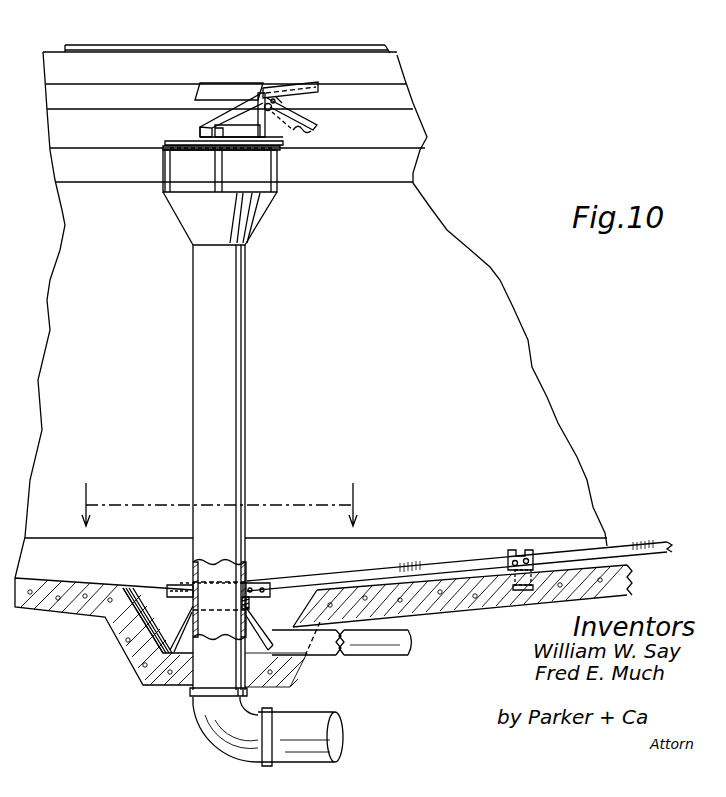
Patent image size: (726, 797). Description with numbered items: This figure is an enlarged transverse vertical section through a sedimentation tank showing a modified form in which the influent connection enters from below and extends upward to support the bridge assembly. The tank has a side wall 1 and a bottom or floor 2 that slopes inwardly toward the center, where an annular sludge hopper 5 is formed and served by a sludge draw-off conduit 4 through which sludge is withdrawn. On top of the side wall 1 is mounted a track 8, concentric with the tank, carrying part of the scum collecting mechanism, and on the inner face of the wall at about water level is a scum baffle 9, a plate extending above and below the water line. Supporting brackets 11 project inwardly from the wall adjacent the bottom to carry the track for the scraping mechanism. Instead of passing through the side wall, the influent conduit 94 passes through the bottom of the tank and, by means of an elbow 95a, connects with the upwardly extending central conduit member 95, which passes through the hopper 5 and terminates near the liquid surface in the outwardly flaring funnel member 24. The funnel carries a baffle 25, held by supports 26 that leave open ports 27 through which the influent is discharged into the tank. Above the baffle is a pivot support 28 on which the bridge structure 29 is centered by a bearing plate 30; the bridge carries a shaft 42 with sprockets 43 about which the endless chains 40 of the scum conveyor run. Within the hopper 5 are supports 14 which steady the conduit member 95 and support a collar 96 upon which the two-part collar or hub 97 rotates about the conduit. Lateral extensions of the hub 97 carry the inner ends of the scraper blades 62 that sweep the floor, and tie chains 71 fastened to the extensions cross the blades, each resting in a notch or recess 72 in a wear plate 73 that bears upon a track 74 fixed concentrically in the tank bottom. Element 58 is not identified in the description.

The side wall 1 is at (420, 215).
The bottom or floor 2 is at (630, 577).
The sludge draw-off conduit 4 is at (380, 647).
The annular sludge hopper 5 is at (147, 618).
The track 8 is at (363, 47).
The scum baffle 9 is at (390, 98).
The supporting brackets 11 is at (220, 489).
The supports 14 is at (173, 637).
The outwardly flared funnel member 24 is at (270, 212).
The baffle 25 is at (162, 144).
The supports 26 is at (275, 167).
The open ports 27 is at (190, 177).
The pivot support 28 is at (237, 129).
The bridge structure 29 is at (243, 100).
The bearing plate 30 is at (195, 141).
The endless chains 40 is at (312, 88).
The shaft 42 is at (270, 101).
The sprockets 43 is at (279, 100).
The plate 58 is at (210, 90).
The scraper blades 62 is at (268, 584).
The tie chains 71 is at (287, 579).
The notch or recess 72 is at (520, 548).
The wear plate 73 is at (531, 566).
The track 74 is at (526, 592).
The influent conduit 94 is at (320, 733).
The central conduit member 95 is at (242, 405).
The elbow 95a is at (207, 722).
The collar 96 is at (250, 605).
The two-part collar or hub 97 is at (192, 580).